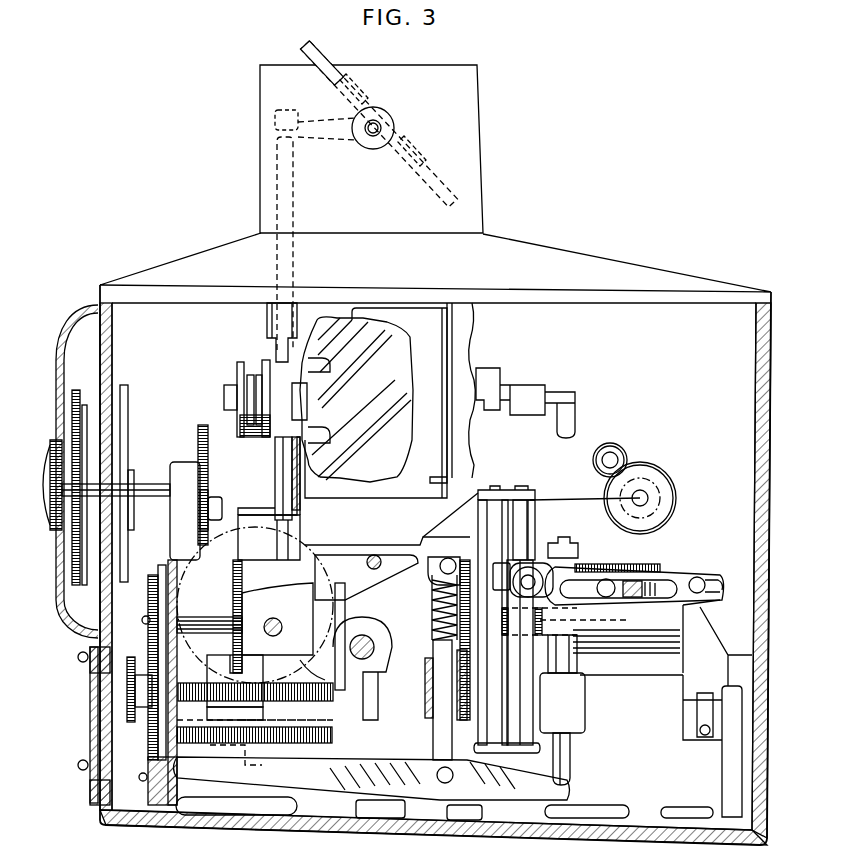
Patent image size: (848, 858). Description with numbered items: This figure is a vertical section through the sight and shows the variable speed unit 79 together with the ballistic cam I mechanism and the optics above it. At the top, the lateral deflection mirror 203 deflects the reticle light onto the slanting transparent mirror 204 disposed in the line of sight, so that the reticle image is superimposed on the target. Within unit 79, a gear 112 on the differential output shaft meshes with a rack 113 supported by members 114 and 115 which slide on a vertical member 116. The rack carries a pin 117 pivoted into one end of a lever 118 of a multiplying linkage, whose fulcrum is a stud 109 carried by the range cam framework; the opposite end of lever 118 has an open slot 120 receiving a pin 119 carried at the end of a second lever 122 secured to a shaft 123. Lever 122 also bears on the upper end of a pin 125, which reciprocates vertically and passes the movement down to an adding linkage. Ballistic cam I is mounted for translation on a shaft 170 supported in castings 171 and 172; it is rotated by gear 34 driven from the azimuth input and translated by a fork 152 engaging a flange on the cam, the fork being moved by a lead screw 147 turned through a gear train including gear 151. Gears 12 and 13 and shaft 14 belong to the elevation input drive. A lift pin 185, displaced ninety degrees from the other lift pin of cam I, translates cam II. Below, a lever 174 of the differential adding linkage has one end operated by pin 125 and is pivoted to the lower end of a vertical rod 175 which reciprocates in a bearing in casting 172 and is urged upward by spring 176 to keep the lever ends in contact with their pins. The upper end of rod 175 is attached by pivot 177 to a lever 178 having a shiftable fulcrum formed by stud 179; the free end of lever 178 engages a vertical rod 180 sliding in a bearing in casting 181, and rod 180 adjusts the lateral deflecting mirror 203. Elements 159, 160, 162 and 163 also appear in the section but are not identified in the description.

The variable speed unit 79 is at (742, 745).
The slanting transparent mirror 204 is at (318, 53).
The lateral deflection mirror 203 is at (358, 399).
The shaft 160 is at (146, 483).
The plate 159 is at (128, 521).
The gear 162 is at (203, 437).
The pinion 163 is at (214, 513).
The vertical rod 180 is at (276, 449).
The casting 181 is at (270, 469).
The second lever 122 is at (622, 568).
The vertical member 116 is at (528, 512).
The member 115 is at (517, 560).
The lever 118 is at (540, 573).
The stud 109 is at (640, 592).
The pin 117 is at (536, 590).
The shaft 123 is at (612, 566).
The open slot 120 is at (728, 578).
The pin 119 is at (710, 598).
The gear 112 is at (610, 632).
The member 114 is at (580, 690).
The pin 125 is at (565, 770).
The lever 178 is at (350, 542).
The shiftable fulcrum stud 179 is at (376, 560).
The spring 176 is at (437, 575).
The pivot 177 is at (452, 565).
The casting 172 is at (340, 612).
The shaft 14 is at (359, 656).
The vertical rod 175 is at (447, 743).
The gear 34 is at (238, 566).
The shaft 170 is at (217, 622).
The lift pin 185 is at (282, 628).
The fork 152 is at (228, 660).
The gear 13 is at (255, 683).
The gear 12 is at (313, 668).
The lead screw 147 is at (346, 702).
The casting 171 is at (170, 565).
The gear 151 is at (135, 667).
The lever 174 is at (265, 779).
The rack 113 is at (236, 760).